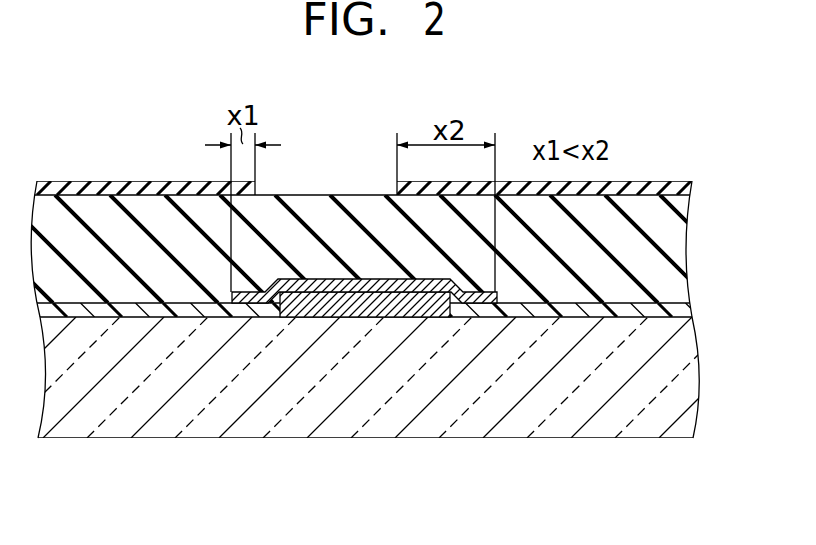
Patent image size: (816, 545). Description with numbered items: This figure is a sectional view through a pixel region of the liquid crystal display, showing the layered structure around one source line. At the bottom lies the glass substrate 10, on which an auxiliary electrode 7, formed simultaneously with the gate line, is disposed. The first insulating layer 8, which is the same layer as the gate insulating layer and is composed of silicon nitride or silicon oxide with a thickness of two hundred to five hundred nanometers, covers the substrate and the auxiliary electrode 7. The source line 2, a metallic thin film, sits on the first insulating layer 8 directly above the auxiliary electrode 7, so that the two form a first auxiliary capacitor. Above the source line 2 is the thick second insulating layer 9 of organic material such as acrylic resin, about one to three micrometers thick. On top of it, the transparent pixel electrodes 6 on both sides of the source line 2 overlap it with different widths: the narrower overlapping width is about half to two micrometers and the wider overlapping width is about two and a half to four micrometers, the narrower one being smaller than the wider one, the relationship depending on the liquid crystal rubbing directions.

The source line 2 is at (360, 279).
The transparent pixel electrode 6 is at (107, 188).
The auxiliary electrode 7 is at (382, 315).
The first insulating layer 8 is at (578, 315).
The second insulating layer 9 is at (307, 224).
The glass substrate 10 is at (250, 387).